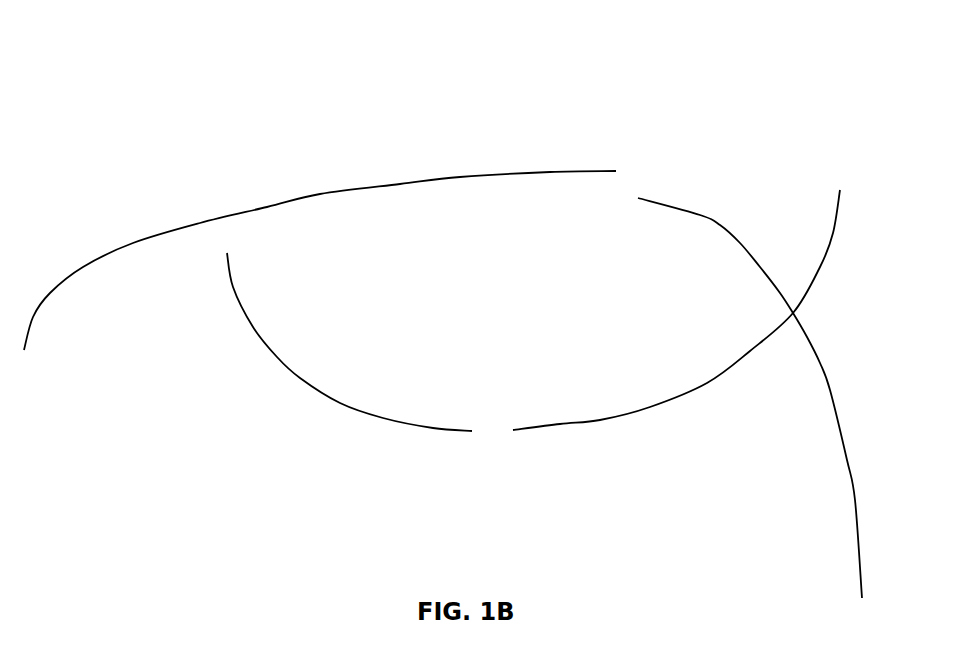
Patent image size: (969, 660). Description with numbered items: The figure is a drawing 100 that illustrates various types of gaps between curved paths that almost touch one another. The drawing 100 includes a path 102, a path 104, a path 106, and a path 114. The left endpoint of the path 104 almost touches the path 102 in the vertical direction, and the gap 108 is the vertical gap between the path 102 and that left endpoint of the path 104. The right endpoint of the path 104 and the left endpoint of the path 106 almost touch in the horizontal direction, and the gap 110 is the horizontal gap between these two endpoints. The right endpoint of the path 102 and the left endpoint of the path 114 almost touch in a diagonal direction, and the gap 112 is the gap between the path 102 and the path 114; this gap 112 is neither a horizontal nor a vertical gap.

The drawing 100 is at (706, 60).
The path 102 is at (462, 175).
The path 104 is at (383, 418).
The path 106 is at (707, 383).
The gap 108 is at (223, 231).
The gap 110 is at (485, 428).
The gap 112 is at (622, 185).
The path 114 is at (830, 390).